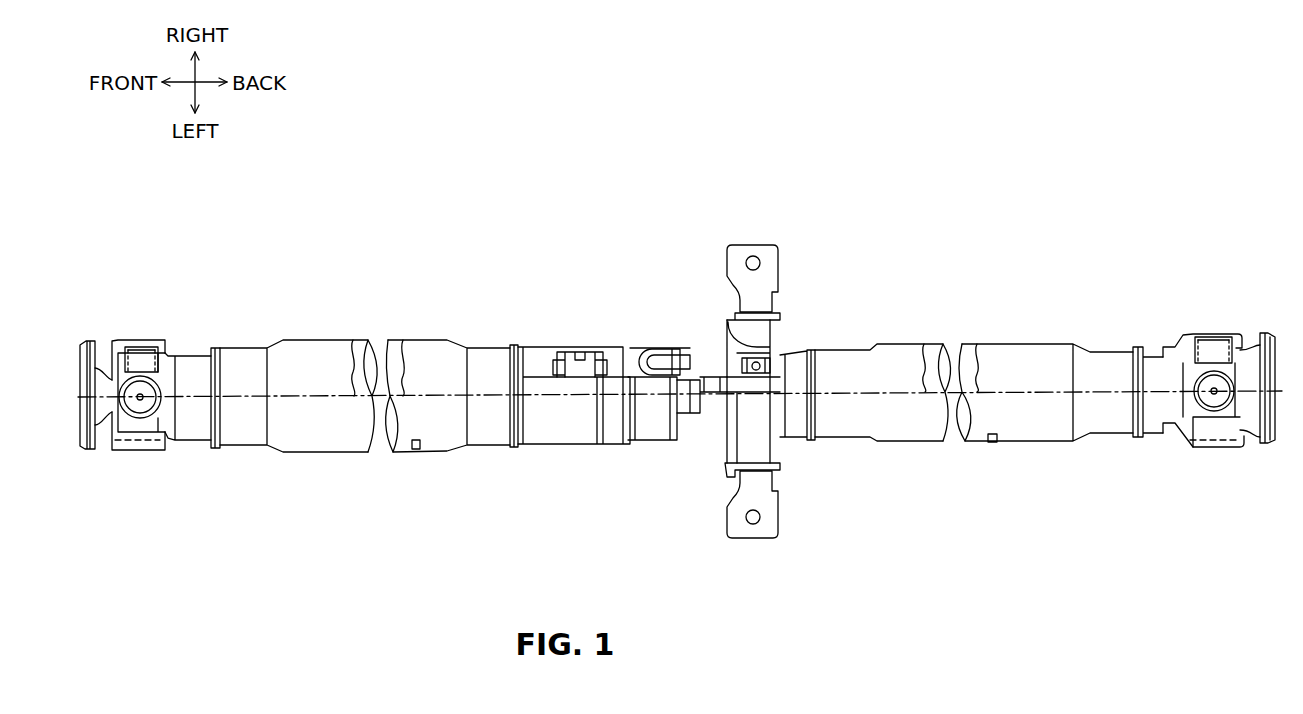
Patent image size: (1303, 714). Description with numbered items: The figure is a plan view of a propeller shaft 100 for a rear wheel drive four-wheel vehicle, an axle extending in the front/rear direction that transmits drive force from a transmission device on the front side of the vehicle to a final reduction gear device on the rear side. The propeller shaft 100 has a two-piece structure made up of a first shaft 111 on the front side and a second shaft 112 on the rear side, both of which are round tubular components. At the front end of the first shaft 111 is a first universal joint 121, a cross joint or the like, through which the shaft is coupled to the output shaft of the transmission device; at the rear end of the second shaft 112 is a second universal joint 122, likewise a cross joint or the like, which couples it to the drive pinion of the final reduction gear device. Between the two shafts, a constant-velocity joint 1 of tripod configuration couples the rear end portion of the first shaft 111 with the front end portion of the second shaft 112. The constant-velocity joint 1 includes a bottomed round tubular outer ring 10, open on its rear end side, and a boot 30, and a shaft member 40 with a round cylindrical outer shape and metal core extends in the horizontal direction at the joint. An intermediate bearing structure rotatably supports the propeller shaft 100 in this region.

The propeller shaft 100 is at (598, 177).
The constant-velocity joint 1 is at (628, 254).
The outer ring 10 is at (565, 337).
The boot 30 is at (645, 336).
The shaft member 40 is at (805, 341).
The first shaft 111 is at (301, 327).
The second shaft 112 is at (1022, 329).
The first universal joint 121 is at (142, 322).
The second universal joint 122 is at (1219, 319).